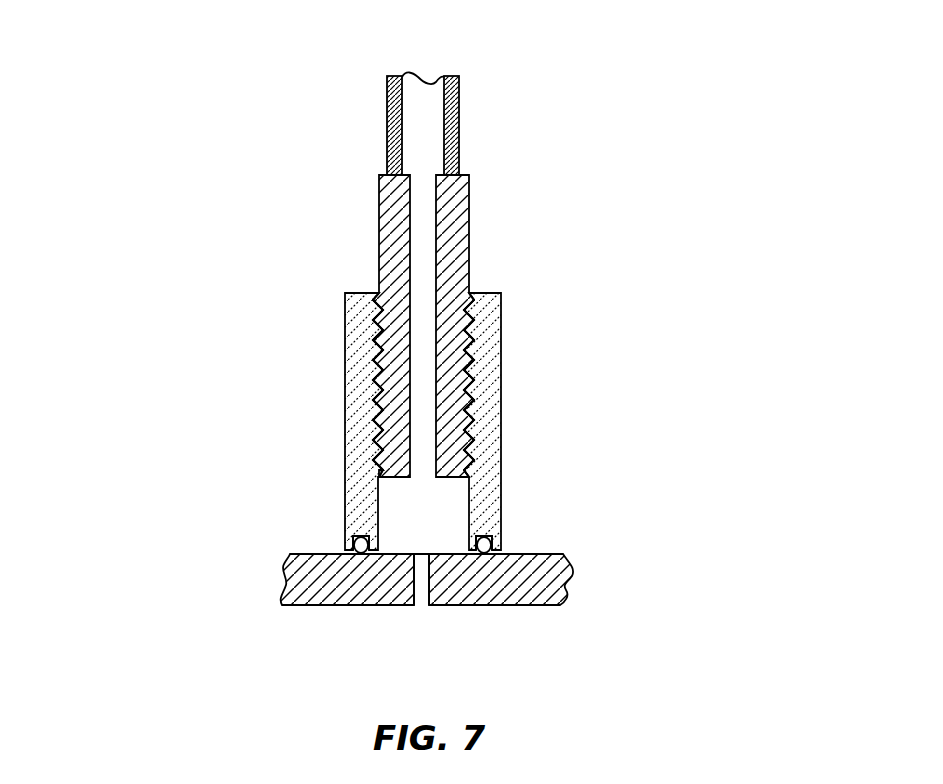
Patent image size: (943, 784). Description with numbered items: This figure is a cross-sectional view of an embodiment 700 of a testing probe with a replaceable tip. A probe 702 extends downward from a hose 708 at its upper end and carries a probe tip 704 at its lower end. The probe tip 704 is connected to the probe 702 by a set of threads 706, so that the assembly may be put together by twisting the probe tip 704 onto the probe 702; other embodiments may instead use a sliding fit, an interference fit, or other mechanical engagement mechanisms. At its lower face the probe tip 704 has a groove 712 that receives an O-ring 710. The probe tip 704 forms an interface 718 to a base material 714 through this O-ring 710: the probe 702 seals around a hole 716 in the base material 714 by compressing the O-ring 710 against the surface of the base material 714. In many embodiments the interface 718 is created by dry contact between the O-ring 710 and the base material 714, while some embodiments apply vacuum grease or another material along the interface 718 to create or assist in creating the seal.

The embodiment showing a probe with a replaceable tip 700 is at (252, 154).
The probe 702 is at (469, 252).
The probe tip 704 is at (501, 380).
The set of threads 706 is at (470, 320).
The hose 708 is at (459, 122).
The O-ring 710 is at (493, 546).
The groove 712 is at (485, 537).
The base material 714 is at (545, 554).
The hole 716 is at (420, 593).
The interface 718 is at (358, 545).